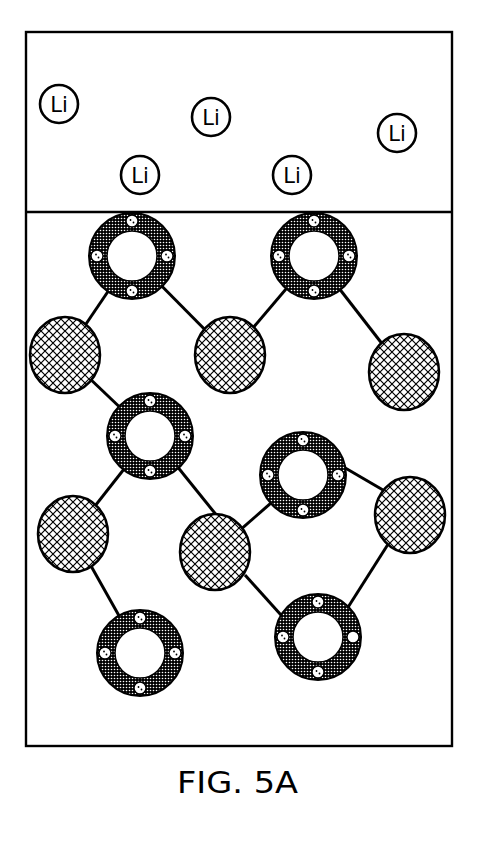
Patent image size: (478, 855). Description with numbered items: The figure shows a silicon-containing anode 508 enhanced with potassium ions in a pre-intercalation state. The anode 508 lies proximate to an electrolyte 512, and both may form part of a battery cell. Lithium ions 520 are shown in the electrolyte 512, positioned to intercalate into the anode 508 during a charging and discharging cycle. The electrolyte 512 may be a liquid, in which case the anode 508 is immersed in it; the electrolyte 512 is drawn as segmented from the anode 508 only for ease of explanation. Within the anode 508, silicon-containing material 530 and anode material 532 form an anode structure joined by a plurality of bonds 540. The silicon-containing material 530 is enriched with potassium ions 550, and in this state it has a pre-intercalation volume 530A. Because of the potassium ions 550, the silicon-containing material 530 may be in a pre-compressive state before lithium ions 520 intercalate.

The anode 508 is at (297, 736).
The electrolyte 512 is at (317, 71).
The lithium ion 520 is at (378, 137).
The silicon-containing material 530 is at (107, 673).
The pre-intercalation volume 530A is at (347, 668).
The anode material 532 is at (264, 358).
The bond 540 is at (199, 489).
The potassium ion 550 is at (360, 637).